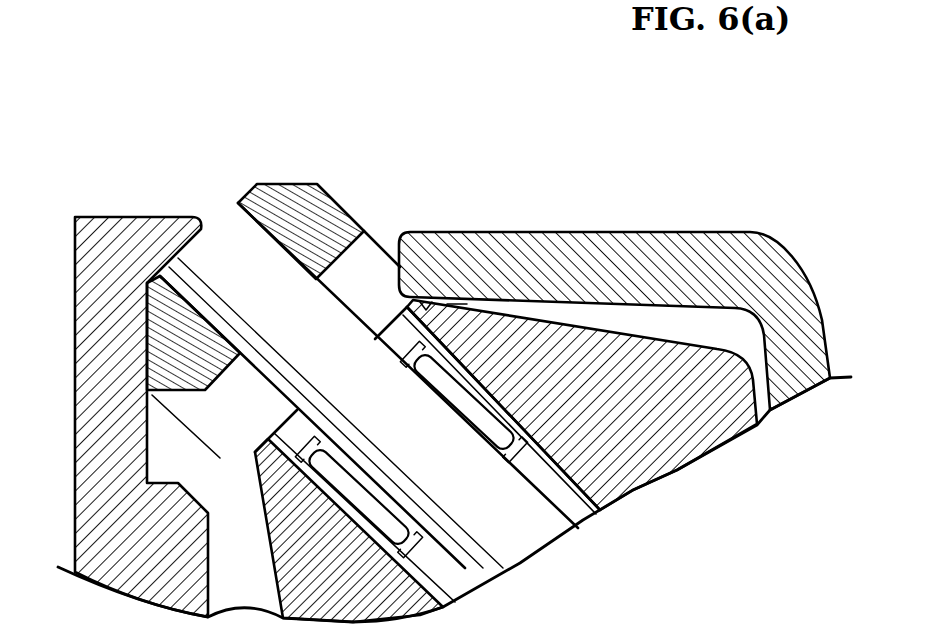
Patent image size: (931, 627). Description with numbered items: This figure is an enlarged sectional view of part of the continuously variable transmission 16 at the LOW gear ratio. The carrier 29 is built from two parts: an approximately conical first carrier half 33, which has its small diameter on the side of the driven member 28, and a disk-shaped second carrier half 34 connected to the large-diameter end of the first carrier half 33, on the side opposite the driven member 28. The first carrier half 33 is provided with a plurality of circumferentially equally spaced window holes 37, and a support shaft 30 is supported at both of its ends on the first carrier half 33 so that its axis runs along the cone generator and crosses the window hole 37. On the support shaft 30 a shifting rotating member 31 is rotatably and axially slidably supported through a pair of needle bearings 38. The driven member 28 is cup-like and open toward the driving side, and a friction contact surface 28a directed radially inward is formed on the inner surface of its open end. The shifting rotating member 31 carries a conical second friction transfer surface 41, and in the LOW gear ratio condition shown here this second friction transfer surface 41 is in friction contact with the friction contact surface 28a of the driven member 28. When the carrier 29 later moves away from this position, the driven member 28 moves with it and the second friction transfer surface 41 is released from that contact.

The continuously variable transmission 16 is at (645, 212).
The driven member 28 is at (735, 250).
The friction contact surface 28a is at (430, 300).
The carrier 29 is at (142, 112).
The support shaft 30 is at (500, 550).
The shifting rotating member 31 is at (657, 463).
The first carrier half 33 is at (282, 200).
The second carrier half 34 is at (146, 250).
The window hole 37 is at (378, 280).
The needle bearing 38 is at (367, 508).
The second friction transfer surface 41 is at (457, 303).